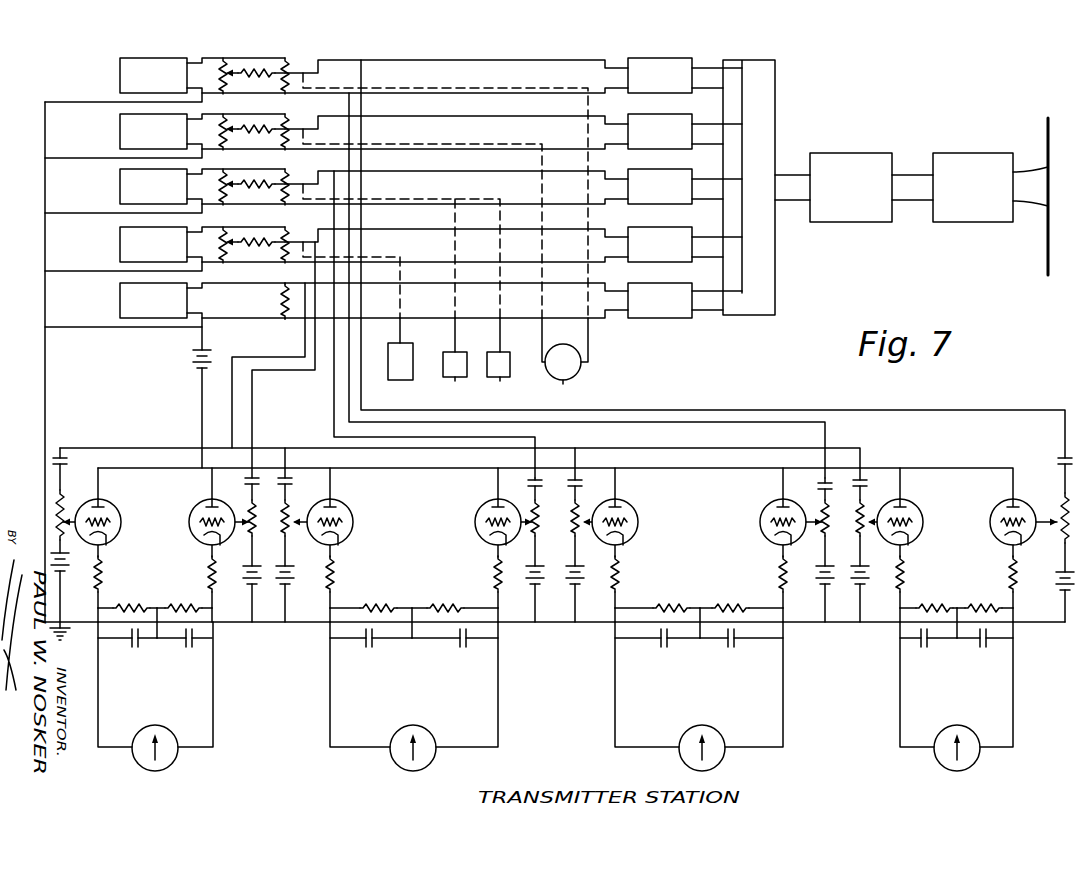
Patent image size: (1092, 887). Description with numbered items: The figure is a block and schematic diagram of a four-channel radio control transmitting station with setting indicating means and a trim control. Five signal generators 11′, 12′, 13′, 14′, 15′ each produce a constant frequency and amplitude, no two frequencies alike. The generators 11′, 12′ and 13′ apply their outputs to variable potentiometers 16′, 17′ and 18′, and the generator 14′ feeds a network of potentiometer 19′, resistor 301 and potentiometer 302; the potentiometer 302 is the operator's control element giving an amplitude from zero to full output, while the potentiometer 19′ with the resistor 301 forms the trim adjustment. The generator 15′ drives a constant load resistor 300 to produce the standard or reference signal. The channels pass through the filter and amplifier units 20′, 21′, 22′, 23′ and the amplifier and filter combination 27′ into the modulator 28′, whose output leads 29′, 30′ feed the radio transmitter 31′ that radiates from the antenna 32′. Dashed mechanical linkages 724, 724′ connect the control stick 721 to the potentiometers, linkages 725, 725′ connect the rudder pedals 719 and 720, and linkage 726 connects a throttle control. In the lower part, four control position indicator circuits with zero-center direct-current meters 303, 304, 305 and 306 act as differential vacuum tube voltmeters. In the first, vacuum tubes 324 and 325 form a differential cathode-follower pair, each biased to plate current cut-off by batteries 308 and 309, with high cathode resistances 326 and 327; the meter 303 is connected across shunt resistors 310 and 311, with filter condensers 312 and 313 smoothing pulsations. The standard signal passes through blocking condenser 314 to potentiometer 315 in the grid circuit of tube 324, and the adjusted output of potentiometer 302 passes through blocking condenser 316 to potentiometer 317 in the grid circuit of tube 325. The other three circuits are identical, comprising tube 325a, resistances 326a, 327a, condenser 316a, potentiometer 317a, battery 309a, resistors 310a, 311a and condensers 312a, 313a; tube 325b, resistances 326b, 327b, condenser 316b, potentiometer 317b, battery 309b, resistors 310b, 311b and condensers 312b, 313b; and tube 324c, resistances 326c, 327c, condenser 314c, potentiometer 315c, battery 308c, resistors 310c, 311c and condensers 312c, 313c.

The signal generator 11′ is at (120, 77).
The signal generator 12′ is at (120, 132).
The signal generator 13′ is at (120, 187).
The signal generator 14′ is at (120, 245).
The signal generator 15′ is at (120, 301).
The variable potentiometer 16′ is at (234, 71).
The variable potentiometer 17′ is at (234, 127).
The variable potentiometer 18′ is at (234, 182).
The potentiometer 19′ is at (234, 240).
The constant load resistor 300 is at (281, 302).
The resistor 301 is at (258, 244).
The potentiometer 302 is at (302, 241).
The amplifier and filter unit 20′ is at (660, 64).
The amplifier and filter unit 21′ is at (660, 121).
The amplifier and filter unit 22′ is at (654, 177).
The filter and amplifier unit 23′ is at (654, 235).
The amplifier and filter combination 27′ is at (654, 291).
The modulator 28′ is at (847, 221).
The modulator output lead 29′ is at (907, 173).
The modulator output lead 30′ is at (911, 203).
The radio transmitter 31′ is at (969, 156).
The antenna 32′ is at (1048, 133).
The mechanical linkage 726 is at (402, 337).
The mechanical linkage 725′ is at (455, 337).
The mechanical linkage 725 is at (500, 337).
The mechanical linkage 724′ is at (563, 347).
The mechanical linkage 724 is at (592, 347).
The rudder pedal 720 is at (453, 381).
The rudder pedal 719 is at (498, 381).
The control stick 721 is at (567, 383).
The blocking condenser 314 is at (67, 462).
The potentiometer 315 is at (62, 502).
The battery 308 is at (66, 577).
The vacuum tube 324 is at (121, 512).
The vacuum tube 325 is at (196, 540).
The cathode resistance 326 is at (104, 560).
The cathode resistance 327 is at (206, 568).
The blocking condenser 316 is at (250, 485).
The potentiometer 317 is at (252, 541).
The battery 309 is at (252, 588).
The shunt resistor 310 is at (124, 606).
The shunt resistor 311 is at (194, 604).
The filter condenser 312 is at (131, 648).
The filter condenser 313 is at (188, 648).
The indicating meter 303 is at (178, 762).
The cathode resistance 326a is at (336, 565).
The vacuum tube 325a is at (476, 536).
The cathode resistance 327a is at (492, 570).
The blocking condenser 316a is at (535, 477).
The potentiometer 317a is at (544, 519).
The battery 309a is at (531, 592).
The shunt resistor 310a is at (375, 605).
The shunt resistor 311a is at (460, 605).
The filter condenser 312a is at (367, 648).
The filter condenser 313a is at (467, 648).
The control position indicator 304 is at (436, 761).
The cathode resistance 326b is at (620, 572).
The vacuum tube 325b is at (762, 536).
The cathode resistance 327b is at (778, 570).
The blocking condenser 316b is at (823, 478).
The potentiometer 317b is at (831, 520).
The battery 309b is at (814, 594).
The shunt resistor 310b is at (678, 605).
The shunt resistor 311b is at (744, 605).
The filter condenser 312b is at (661, 648).
The filter condenser 313b is at (731, 648).
The control position indicator 305 is at (726, 760).
The cathode resistance 326c is at (904, 569).
The vacuum tube 324c is at (998, 543).
The cathode resistance 327c is at (1008, 572).
The blocking condenser 314c is at (1062, 458).
The potentiometer 315c is at (1064, 500).
The battery 308c is at (1062, 594).
The shunt resistor 311c is at (936, 605).
The shunt resistor 310c is at (985, 605).
The filter condenser 313c is at (924, 648).
The filter condenser 312c is at (982, 648).
The control position indicator 306 is at (982, 762).